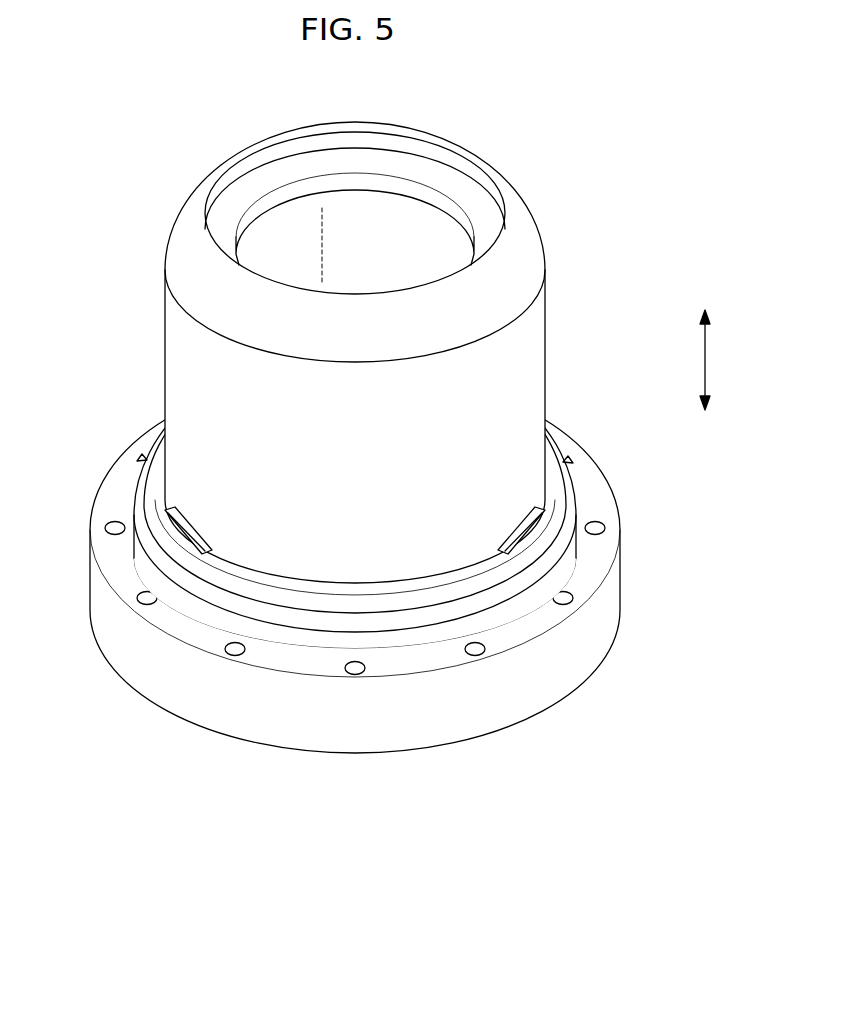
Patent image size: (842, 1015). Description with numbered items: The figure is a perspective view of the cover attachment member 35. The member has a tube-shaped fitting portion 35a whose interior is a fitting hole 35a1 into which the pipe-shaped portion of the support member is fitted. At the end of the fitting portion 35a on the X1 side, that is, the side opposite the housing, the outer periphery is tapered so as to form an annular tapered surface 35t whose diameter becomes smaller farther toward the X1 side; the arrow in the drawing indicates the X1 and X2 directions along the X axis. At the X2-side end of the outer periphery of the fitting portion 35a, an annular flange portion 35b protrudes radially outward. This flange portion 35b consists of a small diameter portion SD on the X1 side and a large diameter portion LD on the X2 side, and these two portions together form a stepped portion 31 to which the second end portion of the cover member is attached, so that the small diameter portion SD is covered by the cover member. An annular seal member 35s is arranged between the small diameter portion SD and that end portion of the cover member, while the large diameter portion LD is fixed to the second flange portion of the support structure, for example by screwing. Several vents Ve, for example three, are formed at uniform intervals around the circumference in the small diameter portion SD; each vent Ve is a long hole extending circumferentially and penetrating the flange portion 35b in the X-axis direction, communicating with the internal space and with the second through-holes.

The cover attachment member 35 is at (487, 151).
The fitting portion 35a is at (176, 334).
The fitting hole 35a1 is at (293, 226).
The tapered surface 35t is at (523, 250).
The seal member 35s is at (573, 511).
The flange portion 35b is at (513, 806).
The small diameter portion SD is at (428, 642).
The large diameter portion LD is at (488, 708).
The stepped portion 31 is at (292, 637).
The vent Ve is at (186, 530).
The X1 side X1 is at (705, 341).
The X2 side X2 is at (705, 419).